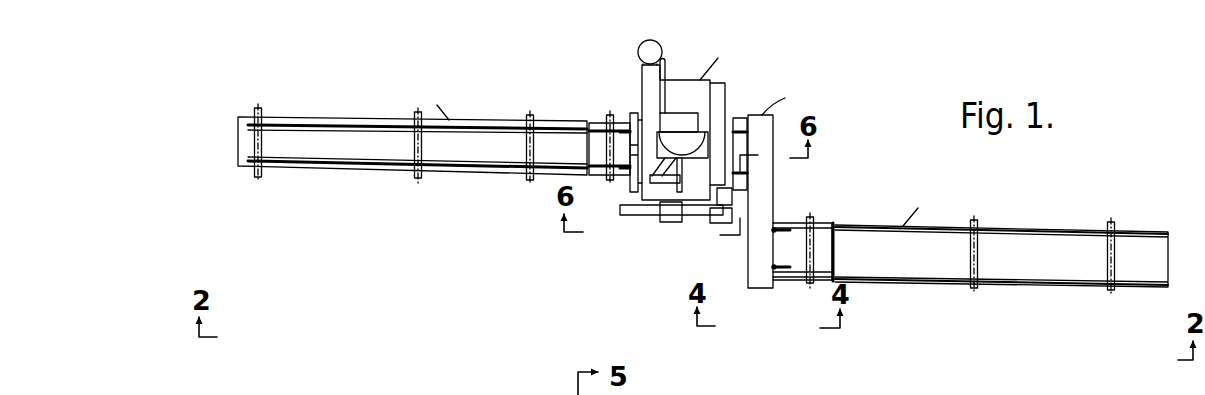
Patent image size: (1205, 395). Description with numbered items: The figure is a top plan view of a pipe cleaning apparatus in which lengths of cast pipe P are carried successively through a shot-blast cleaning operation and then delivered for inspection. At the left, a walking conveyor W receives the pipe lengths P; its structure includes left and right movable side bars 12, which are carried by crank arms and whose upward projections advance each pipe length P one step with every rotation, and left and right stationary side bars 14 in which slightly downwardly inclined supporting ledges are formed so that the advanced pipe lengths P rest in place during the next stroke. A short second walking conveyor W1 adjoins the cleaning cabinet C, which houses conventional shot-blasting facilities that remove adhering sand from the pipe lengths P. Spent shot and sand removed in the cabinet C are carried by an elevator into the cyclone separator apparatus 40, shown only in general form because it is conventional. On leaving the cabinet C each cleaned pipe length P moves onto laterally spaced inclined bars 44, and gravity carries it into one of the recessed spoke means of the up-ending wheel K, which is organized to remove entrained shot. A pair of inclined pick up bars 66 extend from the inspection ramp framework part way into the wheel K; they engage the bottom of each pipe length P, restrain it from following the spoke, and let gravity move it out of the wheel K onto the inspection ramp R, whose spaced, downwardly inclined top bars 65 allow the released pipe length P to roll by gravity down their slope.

The walking conveyor W is at (412, 140).
The side bars 12 is at (335, 127).
The stationary side bars 14 is at (331, 122).
The pipe P is at (258, 183).
The walking conveyor W1 is at (597, 179).
The cleaning cabinet C is at (682, 80).
The cyclone separator apparatus 40 is at (672, 135).
The inclined bars 44 is at (742, 130).
The up-ending wheel K is at (775, 182).
The pick up bars 66 is at (774, 229).
The inspection ramp R is at (1063, 228).
The top bars 65 is at (943, 231).